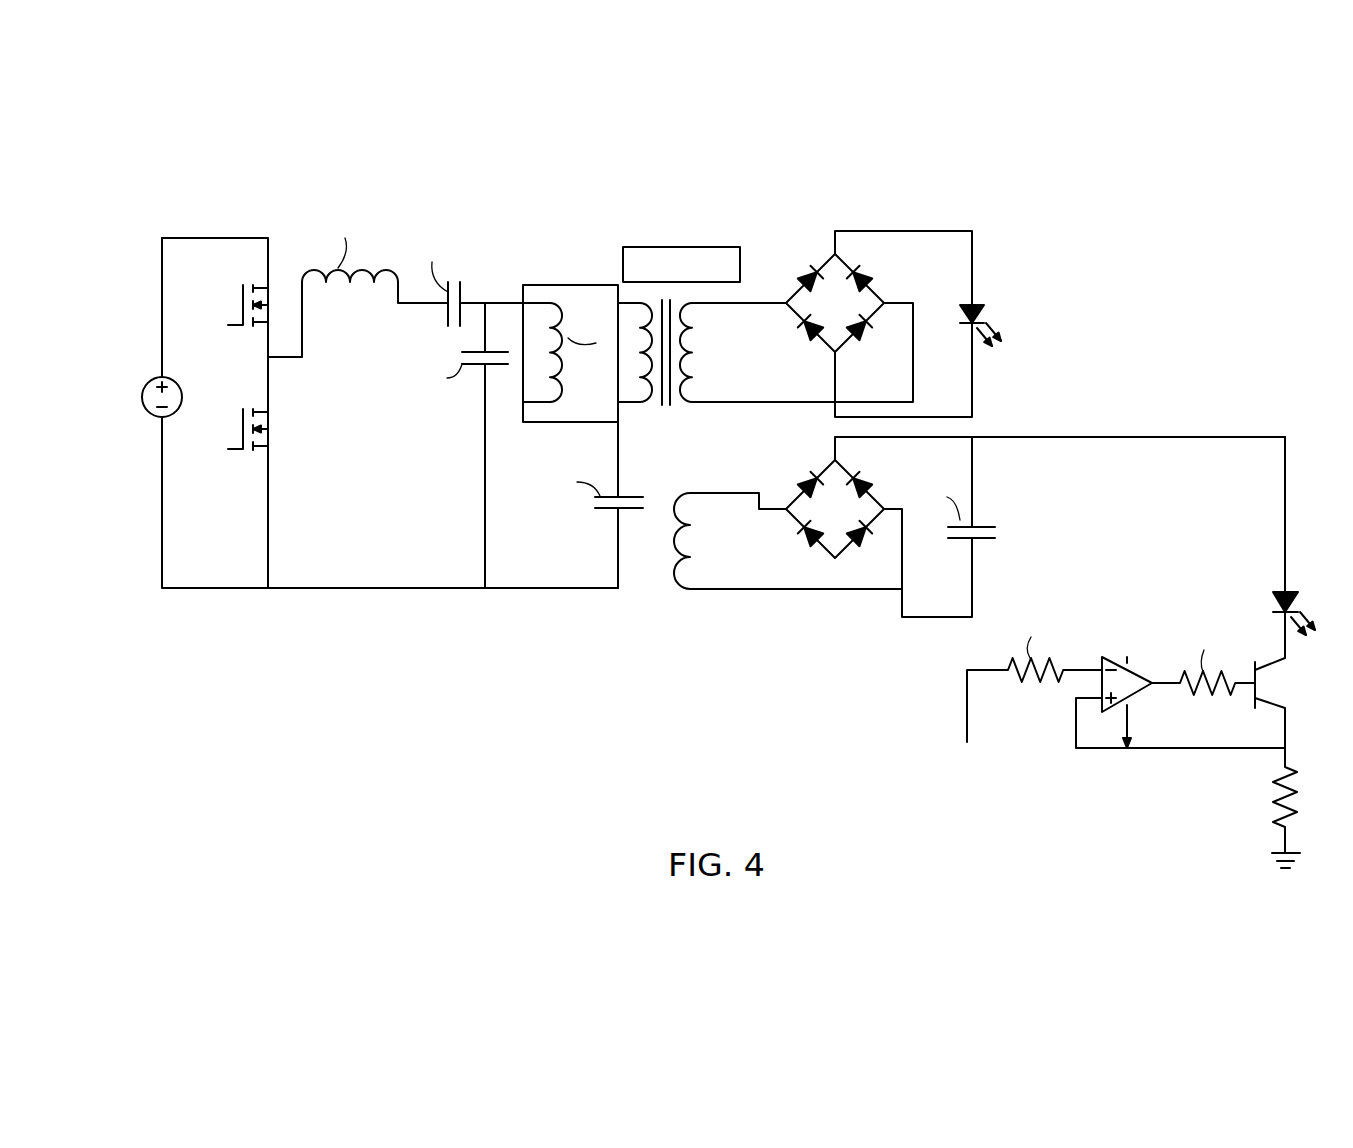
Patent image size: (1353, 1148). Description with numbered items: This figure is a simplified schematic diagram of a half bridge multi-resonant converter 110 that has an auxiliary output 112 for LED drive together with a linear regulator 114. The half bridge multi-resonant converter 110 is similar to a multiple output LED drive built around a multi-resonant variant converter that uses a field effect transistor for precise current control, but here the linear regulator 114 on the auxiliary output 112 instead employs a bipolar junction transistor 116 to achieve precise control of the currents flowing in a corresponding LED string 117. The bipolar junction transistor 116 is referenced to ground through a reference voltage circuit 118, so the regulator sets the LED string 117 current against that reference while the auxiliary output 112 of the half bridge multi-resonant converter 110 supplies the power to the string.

The half bridge multi-resonant converter 110 is at (793, 180).
The auxiliary output 112 is at (994, 608).
The linear regulator 114 is at (1151, 642).
The bipolar junction transistor 116 is at (1252, 675).
The LED string 117 is at (1283, 590).
The reference voltage circuit 118 is at (1105, 635).